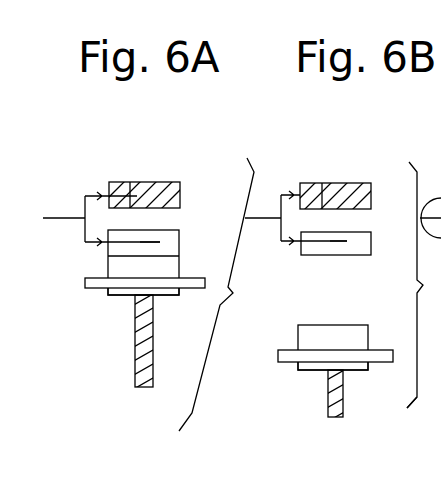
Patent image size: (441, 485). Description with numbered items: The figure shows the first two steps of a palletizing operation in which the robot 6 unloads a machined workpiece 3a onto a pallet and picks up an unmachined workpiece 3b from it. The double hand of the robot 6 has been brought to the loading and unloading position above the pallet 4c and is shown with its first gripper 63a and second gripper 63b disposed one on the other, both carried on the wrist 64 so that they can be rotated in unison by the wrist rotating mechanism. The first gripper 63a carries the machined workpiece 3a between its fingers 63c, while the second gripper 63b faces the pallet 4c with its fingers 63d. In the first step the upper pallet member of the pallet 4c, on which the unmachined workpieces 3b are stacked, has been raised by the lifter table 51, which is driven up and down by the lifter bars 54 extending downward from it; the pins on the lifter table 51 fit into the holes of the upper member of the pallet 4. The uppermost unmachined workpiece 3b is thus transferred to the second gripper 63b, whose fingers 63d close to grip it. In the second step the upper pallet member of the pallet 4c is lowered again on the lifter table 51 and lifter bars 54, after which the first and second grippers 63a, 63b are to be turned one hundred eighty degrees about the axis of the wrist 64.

In FIG. 6A, the machined workpiece 3a is at (172, 183).
In FIG. 6B, the machined workpiece 3a is at (362, 183).
In FIG. 6A, the unmachined workpiece 3b is at (172, 270).
In FIG. 6B, the unmachined workpiece 3b is at (363, 247).
In FIG. 6A, the pallet 4c is at (98, 288).
In FIG. 6B, the pallet 4c is at (288, 358).
In FIG. 6A, the lifter table 51 is at (167, 295).
In FIG. 6B, the lifter table 51 is at (358, 368).
In FIG. 6A, the lifter bar 54 is at (133, 347).
In FIG. 6B, the lifter bar 54 is at (330, 407).
In FIG. 6A, the first gripper 63a is at (90, 195).
In FIG. 6B, the first gripper 63a is at (285, 192).
In FIG. 6A, the second gripper 63b is at (85, 243).
In FIG. 6B, the second gripper 63b is at (288, 243).
In FIG. 6A, the fingers of the first gripper 63c is at (137, 193).
In FIG. 6B, the fingers of the first gripper 63c is at (327, 183).
In FIG. 6A, the fingers of the second gripper 63d is at (147, 240).
In FIG. 6B, the fingers of the second gripper 63d is at (330, 242).
In FIG. 6A, the wrist 64 is at (60, 218).
In FIG. 6B, the wrist 64 is at (263, 220).
In FIG. 6B, the robot 6 is at (430, 220).
In FIG. 6B, the pallet 4 is at (424, 411).